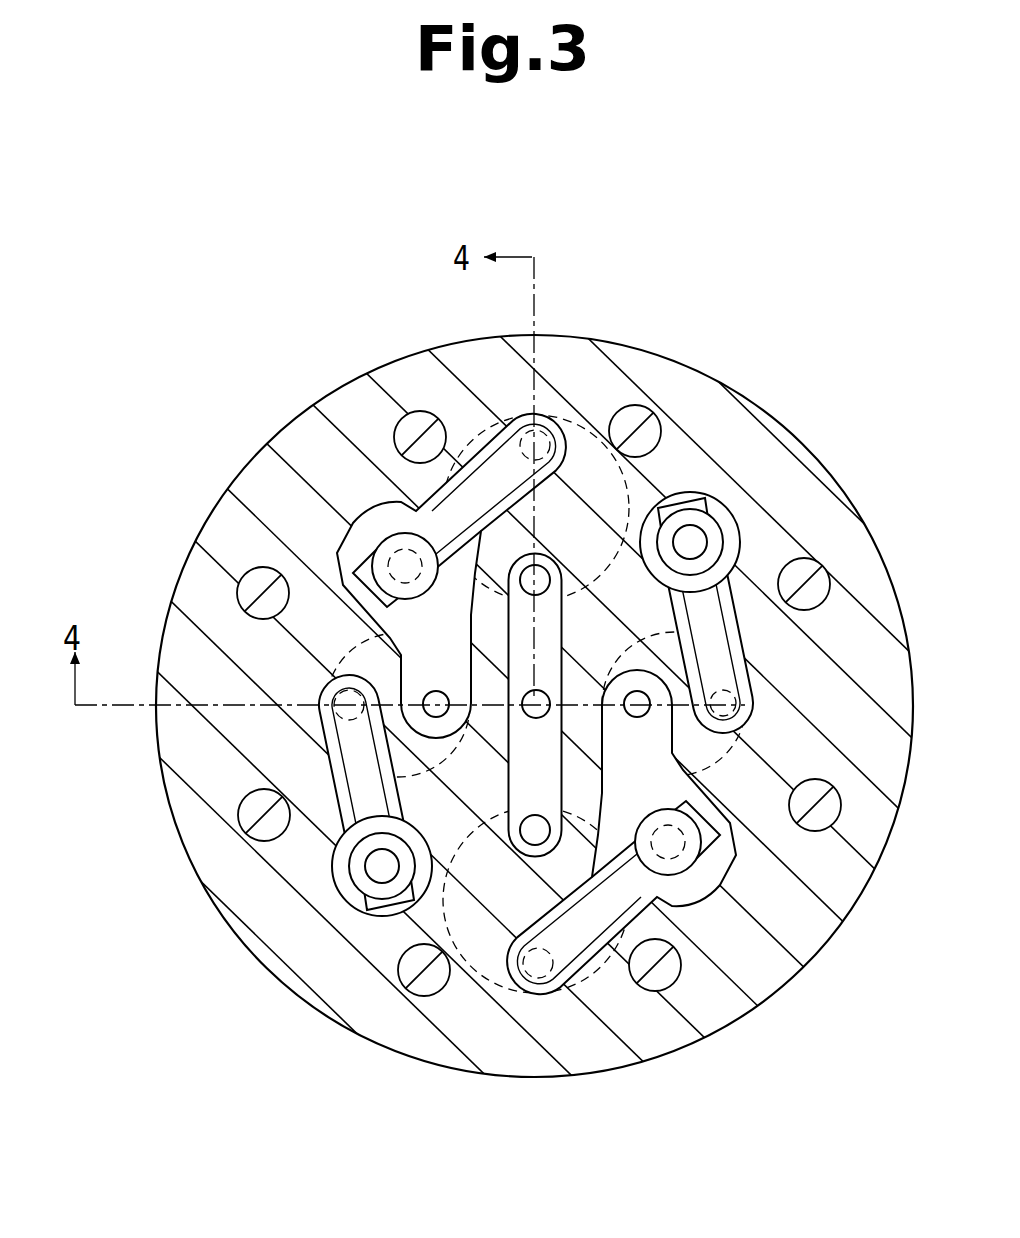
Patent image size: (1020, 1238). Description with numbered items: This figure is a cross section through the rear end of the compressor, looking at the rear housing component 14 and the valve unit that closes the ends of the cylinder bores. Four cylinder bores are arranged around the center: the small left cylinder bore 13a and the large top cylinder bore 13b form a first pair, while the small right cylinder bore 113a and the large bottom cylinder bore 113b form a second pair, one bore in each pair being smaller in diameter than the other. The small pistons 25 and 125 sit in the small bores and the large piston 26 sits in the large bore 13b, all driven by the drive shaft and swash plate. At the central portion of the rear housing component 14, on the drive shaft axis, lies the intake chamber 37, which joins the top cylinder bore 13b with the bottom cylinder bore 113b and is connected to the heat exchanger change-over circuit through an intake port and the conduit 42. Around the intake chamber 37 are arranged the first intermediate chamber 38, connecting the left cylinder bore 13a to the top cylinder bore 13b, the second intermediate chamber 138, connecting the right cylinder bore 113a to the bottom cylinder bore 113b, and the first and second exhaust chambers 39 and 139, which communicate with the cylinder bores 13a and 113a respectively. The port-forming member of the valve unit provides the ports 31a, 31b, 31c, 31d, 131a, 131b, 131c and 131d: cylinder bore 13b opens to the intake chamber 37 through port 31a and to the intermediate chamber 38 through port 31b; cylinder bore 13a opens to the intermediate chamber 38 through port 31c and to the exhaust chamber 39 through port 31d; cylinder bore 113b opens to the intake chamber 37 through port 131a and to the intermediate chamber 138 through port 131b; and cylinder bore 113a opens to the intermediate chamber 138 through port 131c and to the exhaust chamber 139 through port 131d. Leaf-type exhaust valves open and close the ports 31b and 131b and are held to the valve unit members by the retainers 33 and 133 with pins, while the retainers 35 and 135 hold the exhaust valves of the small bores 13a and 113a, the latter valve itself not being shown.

The rear housing component 14 is at (578, 360).
The cylinder bore 13a is at (345, 652).
The cylinder bore 13b is at (581, 490).
The cylinder bore 113a is at (738, 742).
The cylinder bore 113b is at (517, 998).
The small piston 25 is at (350, 643).
The small piston 125 is at (635, 647).
The large piston 26 is at (587, 427).
The retainer 33 is at (435, 518).
The retainer 133 is at (663, 902).
The retainer 35 is at (313, 825).
The retainer 135 is at (767, 577).
The intake chamber 37 is at (510, 704).
The intermediate chamber 38 is at (386, 540).
The intermediate chamber 138 is at (688, 882).
The exhaust chamber 39 is at (345, 875).
The exhaust chamber 139 is at (725, 518).
The conduit 42 is at (637, 739).
The port 31a is at (556, 570).
The port 31b is at (520, 414).
The port 31c is at (435, 690).
The port 31d is at (318, 714).
The port 131a is at (524, 842).
The port 131b is at (547, 996).
The port 131c is at (648, 716).
The port 131d is at (745, 698).